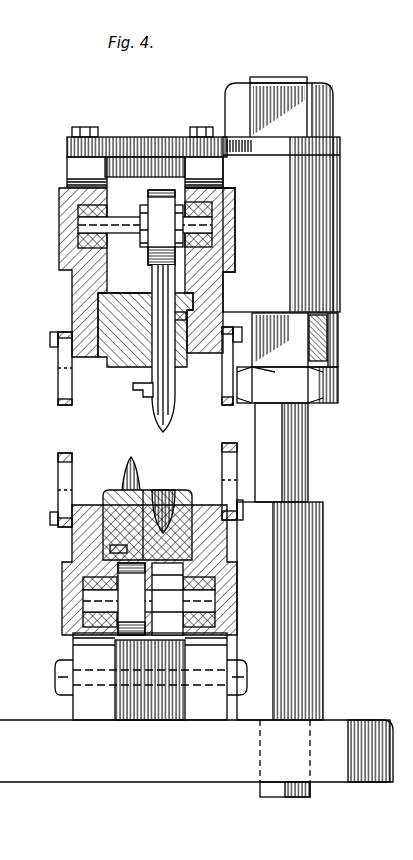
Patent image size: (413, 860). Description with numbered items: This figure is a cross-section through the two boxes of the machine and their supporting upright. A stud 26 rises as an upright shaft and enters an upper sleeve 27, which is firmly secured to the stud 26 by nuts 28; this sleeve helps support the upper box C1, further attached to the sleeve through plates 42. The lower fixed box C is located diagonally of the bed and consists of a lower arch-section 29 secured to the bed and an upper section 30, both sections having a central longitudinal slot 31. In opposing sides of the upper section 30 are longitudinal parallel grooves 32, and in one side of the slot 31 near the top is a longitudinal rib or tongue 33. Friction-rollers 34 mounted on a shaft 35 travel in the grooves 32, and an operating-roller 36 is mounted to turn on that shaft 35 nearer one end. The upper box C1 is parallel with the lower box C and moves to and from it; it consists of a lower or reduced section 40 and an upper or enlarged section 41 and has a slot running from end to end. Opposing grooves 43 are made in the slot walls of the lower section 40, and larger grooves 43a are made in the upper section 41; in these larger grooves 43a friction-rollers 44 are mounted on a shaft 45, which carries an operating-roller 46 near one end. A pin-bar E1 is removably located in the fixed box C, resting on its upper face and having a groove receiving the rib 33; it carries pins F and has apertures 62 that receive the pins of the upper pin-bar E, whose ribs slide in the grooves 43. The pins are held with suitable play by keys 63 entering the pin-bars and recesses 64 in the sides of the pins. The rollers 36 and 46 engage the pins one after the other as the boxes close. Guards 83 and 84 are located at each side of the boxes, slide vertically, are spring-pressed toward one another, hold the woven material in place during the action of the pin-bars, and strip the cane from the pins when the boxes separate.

The plates 42 is at (163, 137).
The nuts 28 is at (340, 115).
The upper sleeve 27 is at (294, 246).
The upper or enlarged section 41 is at (235, 190).
The upper box C1 is at (70, 275).
The friction-rollers 44 is at (235, 238).
The grooves 43 is at (98, 297).
The larger grooves 43a is at (245, 211).
The shaft 45 is at (87, 233).
The operating-roller 46 is at (150, 200).
The fixed box C is at (48, 648).
The keys 63 is at (190, 321).
The lower or reduced section 40 is at (80, 352).
The guards 83 is at (58, 393).
The recesses 64 is at (217, 366).
The upper pin-bar E is at (93, 385).
The pins F is at (138, 478).
The guards 84 is at (58, 485).
The stud 26 is at (310, 455).
The upper section 30 is at (72, 548).
The pin-bar E1 is at (112, 490).
The apertures 62 is at (168, 490).
The longitudinal rib or tongue 33 is at (193, 492).
The operating-roller 36 is at (88, 586).
The longitudinal parallel grooves 32 is at (213, 603).
The friction-rollers 34 is at (85, 610).
The shaft 35 is at (150, 599).
The central longitudinal slot or opening 31 is at (167, 599).
The lower arch-section 29 is at (151, 676).